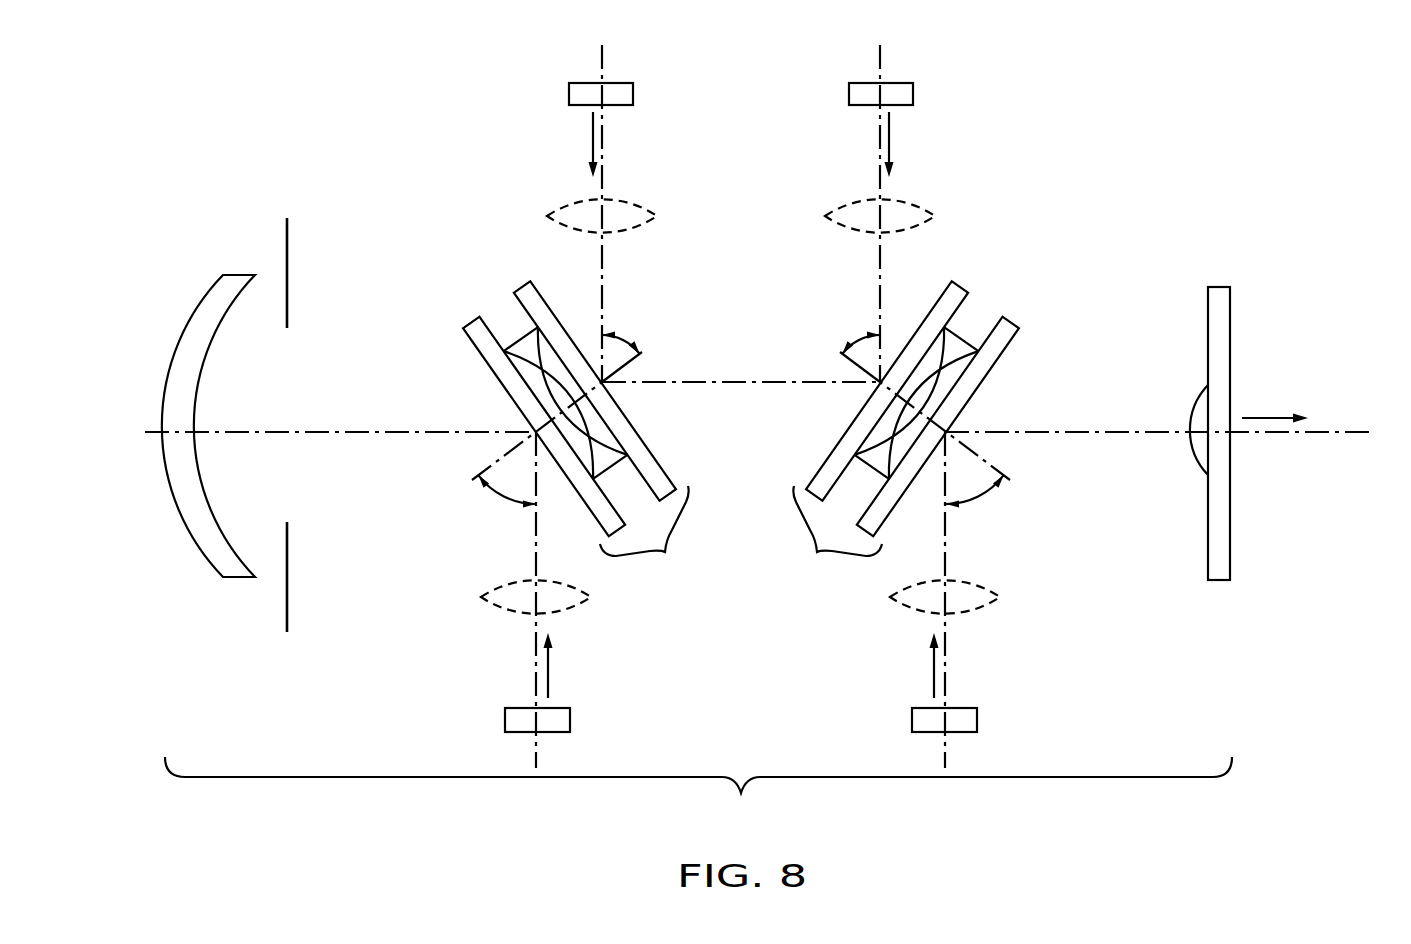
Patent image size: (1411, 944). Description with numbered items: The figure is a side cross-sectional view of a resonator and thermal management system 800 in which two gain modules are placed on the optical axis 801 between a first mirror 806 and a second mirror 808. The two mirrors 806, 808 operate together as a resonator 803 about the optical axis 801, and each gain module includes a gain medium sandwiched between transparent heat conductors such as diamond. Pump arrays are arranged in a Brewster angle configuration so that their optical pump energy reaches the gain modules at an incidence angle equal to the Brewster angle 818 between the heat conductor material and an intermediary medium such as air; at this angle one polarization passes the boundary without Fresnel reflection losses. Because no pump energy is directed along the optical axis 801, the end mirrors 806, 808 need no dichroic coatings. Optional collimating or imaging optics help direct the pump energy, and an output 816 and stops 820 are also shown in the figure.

The resonator and thermal management system 800 is at (358, 173).
The optical axis 801 is at (1352, 431).
The resonator 803 is at (698, 794).
The first mirror 806 is at (186, 321).
The second mirror 808 is at (1230, 497).
The output beam 816 is at (1268, 416).
The Brewster angle 818 is at (624, 340).
The aperture stop 820 is at (287, 234).